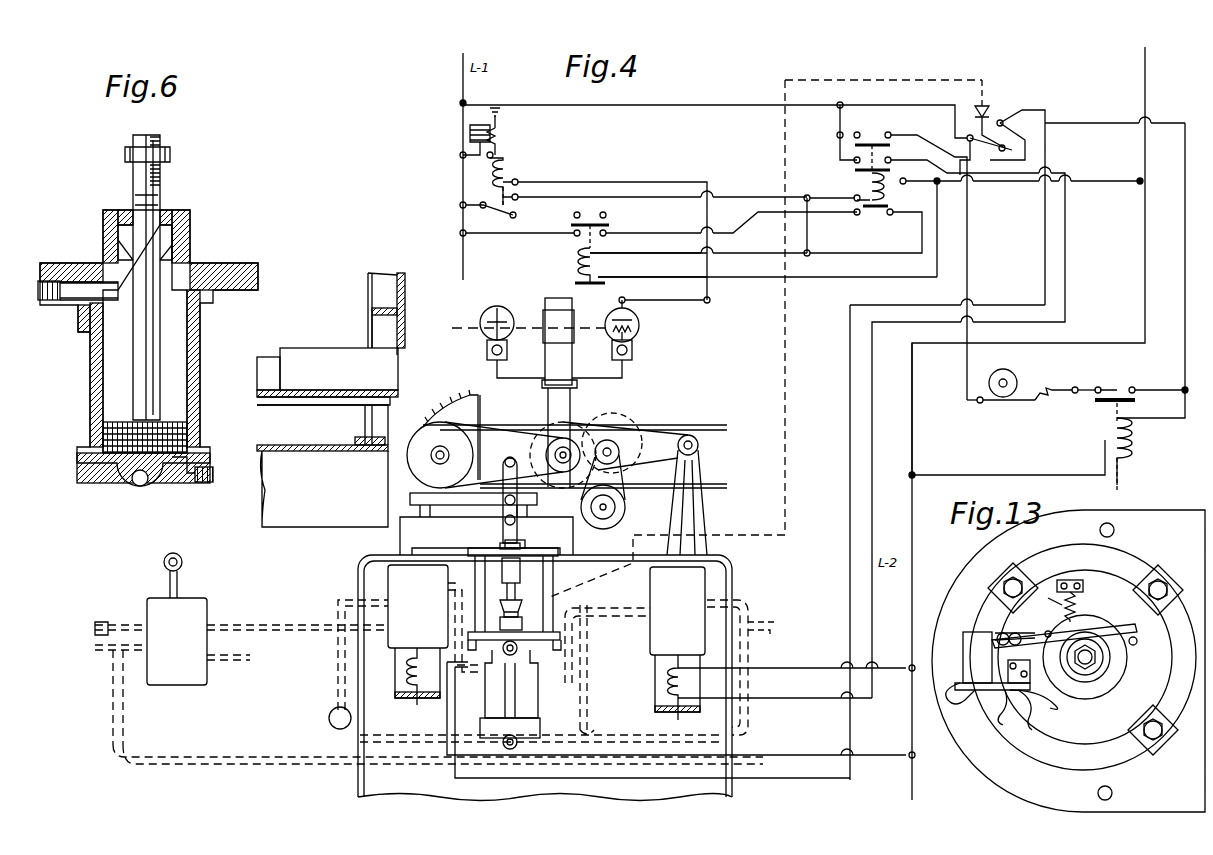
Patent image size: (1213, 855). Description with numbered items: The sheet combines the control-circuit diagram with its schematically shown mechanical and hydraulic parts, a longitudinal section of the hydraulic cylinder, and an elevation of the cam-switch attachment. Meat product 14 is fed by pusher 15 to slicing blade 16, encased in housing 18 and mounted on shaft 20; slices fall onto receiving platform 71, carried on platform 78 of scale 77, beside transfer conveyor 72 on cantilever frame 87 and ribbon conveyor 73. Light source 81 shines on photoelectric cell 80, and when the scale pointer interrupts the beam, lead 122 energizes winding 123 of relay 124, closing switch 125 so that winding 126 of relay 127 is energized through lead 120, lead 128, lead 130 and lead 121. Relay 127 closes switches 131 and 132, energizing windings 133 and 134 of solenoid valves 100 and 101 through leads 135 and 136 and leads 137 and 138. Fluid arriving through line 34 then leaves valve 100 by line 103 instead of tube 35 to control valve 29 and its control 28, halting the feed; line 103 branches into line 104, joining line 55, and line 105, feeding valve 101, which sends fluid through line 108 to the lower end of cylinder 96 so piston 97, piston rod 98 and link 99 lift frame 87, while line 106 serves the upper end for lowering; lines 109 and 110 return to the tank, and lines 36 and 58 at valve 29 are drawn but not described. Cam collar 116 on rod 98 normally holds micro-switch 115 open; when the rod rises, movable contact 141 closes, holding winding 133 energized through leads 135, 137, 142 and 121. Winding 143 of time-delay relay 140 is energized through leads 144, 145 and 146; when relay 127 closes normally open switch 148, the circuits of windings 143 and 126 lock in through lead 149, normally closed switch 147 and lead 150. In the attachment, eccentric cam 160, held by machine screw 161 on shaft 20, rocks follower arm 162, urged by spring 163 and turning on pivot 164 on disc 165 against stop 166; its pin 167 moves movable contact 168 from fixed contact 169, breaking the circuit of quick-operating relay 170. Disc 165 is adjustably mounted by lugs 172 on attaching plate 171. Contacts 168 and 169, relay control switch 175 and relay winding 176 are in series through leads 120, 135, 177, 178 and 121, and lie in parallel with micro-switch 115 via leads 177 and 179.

In FIG. 6, the piston rod 98 is at (133, 195).
In FIG. 4, the piston rod 98 is at (522, 590).
In FIG. 6, the hydraulic cylinder 96 is at (90, 355).
In FIG. 4, the hydraulic cylinder 96 is at (522, 702).
In FIG. 6, the piston 97 is at (186, 425).
In FIG. 6, the line 106 is at (40, 287).
In FIG. 4, the line 106 is at (608, 630).
In FIG. 6, the line 108 is at (215, 470).
In FIG. 4, the line 108 is at (748, 608).
In FIG. 4, the lead 120 is at (463, 103).
In FIG. 4, the lead 121 is at (1146, 96).
In FIG. 4, the lead 122 is at (640, 182).
In FIG. 4, the winding 123 is at (515, 172).
In FIG. 4, the photoelectric cell relay 124 is at (500, 128).
In FIG. 4, the switch 125 is at (508, 217).
In FIG. 4, the winding 126 is at (868, 183).
In FIG. 4, the relay 127 is at (844, 148).
In FIG. 4, the lead 128 is at (745, 190).
In FIG. 4, the lead 130 is at (1030, 188).
In FIG. 4, the switch 131 is at (872, 140).
In FIG. 4, the switch 132 is at (880, 165).
In FIG. 4, the lead 135 is at (712, 95).
In FIG. 4, the lead 136 is at (840, 124).
In FIG. 4, the lead 137 is at (1047, 150).
In FIG. 4, the lead 138 is at (1066, 272).
In FIG. 4, the time delay relay 140 is at (571, 240).
In FIG. 4, the movable contact 141 is at (1000, 168).
In FIG. 4, the winding 143 is at (606, 265).
In FIG. 4, the lead 144 is at (807, 237).
In FIG. 4, the lead 145 is at (828, 256).
In FIG. 4, the lead 146 is at (820, 282).
In FIG. 4, the switch 147 is at (583, 222).
In FIG. 4, the switch 148 is at (880, 226).
In FIG. 4, the lead 149 is at (475, 233).
In FIG. 4, the lead 150 is at (745, 233).
In FIG. 4, the micro-switch 115 is at (992, 100).
In FIG. 4, the eccentric cam 160 is at (1010, 378).
In FIG. 13, the eccentric cam 160 is at (1110, 656).
In FIG. 13, the machine screw 161 is at (1104, 672).
In FIG. 13, the follower arm 162 is at (1082, 638).
In FIG. 13, the spring 163 is at (1088, 592).
In FIG. 13, the pivot 164 is at (1010, 632).
In FIG. 13, the disc 165 is at (1122, 585).
In FIG. 13, the stop 166 is at (1137, 641).
In FIG. 13, the pin 167 is at (1071, 630).
In FIG. 4, the movable contact 168 is at (1020, 400).
In FIG. 13, the movable contact 168 is at (1054, 608).
In FIG. 4, the fixed contact 169 is at (1060, 388).
In FIG. 13, the fixed contact 169 is at (965, 657).
In FIG. 4, the quick operating relay 170 is at (1135, 447).
In FIG. 13, the quick operating relay 170 is at (975, 690).
In FIG. 13, the attaching plate 171 is at (1195, 498).
In FIG. 13, the lugs 172 is at (1170, 585).
In FIG. 4, the relay control switch 175 is at (1117, 392).
In FIG. 13, the relay control switch 175 is at (1035, 683).
In FIG. 4, the relay winding 176 is at (1105, 440).
In FIG. 4, the lead 177 is at (969, 272).
In FIG. 13, the lead 177 is at (1005, 720).
In FIG. 4, the lead 178 is at (1035, 475).
In FIG. 13, the lead 178 is at (1030, 735).
In FIG. 4, the lead 179 is at (1185, 252).
In FIG. 13, the lead 179 is at (1050, 705).
In FIG. 13, the rotatable shaft 20 is at (1105, 690).
In FIG. 4, the light beam source 81 is at (497, 308).
In FIG. 4, the scale 77 is at (555, 305).
In FIG. 4, the photoelectric cell 80 is at (640, 325).
In FIG. 4, the housing 18 is at (366, 286).
In FIG. 4, the slicing blade 16 is at (405, 303).
In FIG. 4, the pusher 15 is at (266, 357).
In FIG. 4, the meat product 14 is at (305, 348).
In FIG. 4, the receiving platform 71 is at (447, 416).
In FIG. 4, the cantilever-type frame 87 is at (490, 440).
In FIG. 4, the transfer conveyor 72 is at (588, 430).
In FIG. 4, the ribbon conveyor 73 is at (708, 419).
In FIG. 4, the platform 78 is at (415, 500).
In FIG. 4, the link 99 is at (503, 515).
In FIG. 4, the control 28 is at (178, 553).
In FIG. 4, the main on-and-off control valve 29 is at (186, 606).
In FIG. 4, the line 55 is at (103, 622).
In FIG. 4, the pipe 58 is at (140, 662).
In FIG. 4, the tube 35 is at (265, 630).
In FIG. 4, the pipe 36 is at (220, 672).
In FIG. 4, the line 34 is at (337, 662).
In FIG. 4, the line 104 is at (252, 760).
In FIG. 4, the line 103 is at (440, 748).
In FIG. 4, the solenoid valve 100 is at (418, 631).
In FIG. 4, the line 109 is at (447, 628).
In FIG. 4, the winding 133 is at (410, 680).
In FIG. 4, the solenoid valve 101 is at (677, 639).
In FIG. 4, the winding 134 is at (668, 683).
In FIG. 4, the line 105 is at (592, 690).
In FIG. 4, the line 110 is at (758, 632).
In FIG. 4, the lead 142 is at (768, 757).
In FIG. 4, the tapered cam collar 116 is at (526, 606).